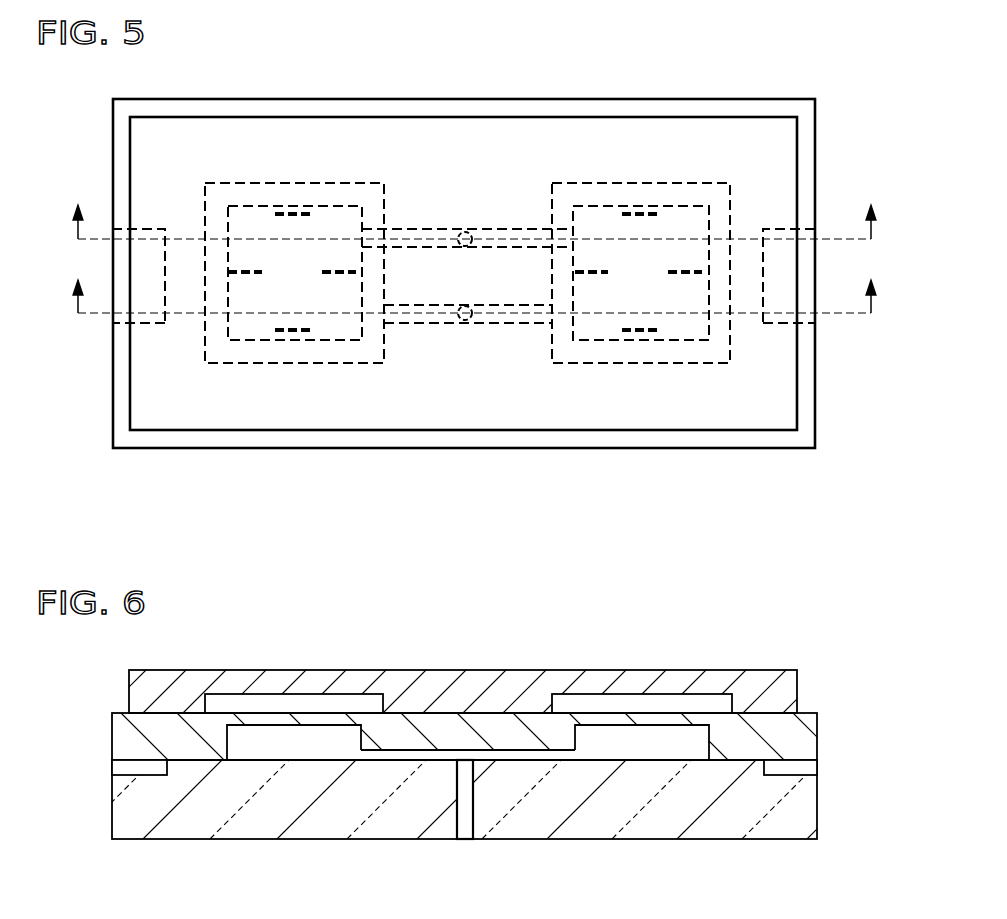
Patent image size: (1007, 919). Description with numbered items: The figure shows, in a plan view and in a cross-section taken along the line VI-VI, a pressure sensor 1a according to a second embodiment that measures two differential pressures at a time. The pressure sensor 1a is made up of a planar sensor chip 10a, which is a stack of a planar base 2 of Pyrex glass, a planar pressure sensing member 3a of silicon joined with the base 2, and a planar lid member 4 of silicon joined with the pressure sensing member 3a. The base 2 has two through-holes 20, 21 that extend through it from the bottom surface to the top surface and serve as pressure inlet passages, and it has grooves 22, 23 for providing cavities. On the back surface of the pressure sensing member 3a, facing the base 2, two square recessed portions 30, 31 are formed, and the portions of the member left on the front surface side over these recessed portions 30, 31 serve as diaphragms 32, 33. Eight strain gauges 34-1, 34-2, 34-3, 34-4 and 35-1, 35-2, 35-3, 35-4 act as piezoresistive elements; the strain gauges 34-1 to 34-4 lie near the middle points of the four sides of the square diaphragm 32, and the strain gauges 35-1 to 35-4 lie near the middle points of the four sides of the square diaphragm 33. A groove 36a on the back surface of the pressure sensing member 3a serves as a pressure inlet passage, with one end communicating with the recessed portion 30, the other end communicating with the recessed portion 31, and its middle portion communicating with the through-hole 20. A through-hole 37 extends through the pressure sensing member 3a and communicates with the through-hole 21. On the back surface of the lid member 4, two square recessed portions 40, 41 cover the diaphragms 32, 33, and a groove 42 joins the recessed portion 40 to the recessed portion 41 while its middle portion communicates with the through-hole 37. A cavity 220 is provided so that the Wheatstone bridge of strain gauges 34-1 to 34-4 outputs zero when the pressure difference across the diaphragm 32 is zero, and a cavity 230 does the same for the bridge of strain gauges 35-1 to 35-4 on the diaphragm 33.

In FIG. 5, the pressure sensor 1a is at (467, 73).
In FIG. 6, the pressure sensor 1a is at (442, 598).
In FIG. 6, the base 2 is at (803, 797).
In FIG. 5, the pressure sensing member 3a is at (817, 123).
In FIG. 6, the pressure sensing member 3a is at (803, 735).
In FIG. 5, the lid member 4 is at (130, 387).
In FIG. 6, the lid member 4 is at (792, 694).
In FIG. 5, the sensor chip 10a is at (135, 99).
In FIG. 6, the sensor chip 10a is at (95, 839).
In FIG. 5, the through-hole 20 is at (465, 230).
In FIG. 6, the through-hole 20 is at (465, 833).
In FIG. 5, the through-hole 21 is at (467, 323).
In FIG. 5, the groove 22 is at (775, 323).
In FIG. 6, the groove 22 is at (790, 777).
In FIG. 5, the groove 23 is at (142, 327).
In FIG. 6, the groove 23 is at (138, 777).
In FIG. 5, the cavity 220 is at (780, 262).
In FIG. 6, the cavity 220 is at (763, 767).
In FIG. 5, the cavity 230 is at (142, 262).
In FIG. 6, the cavity 230 is at (167, 770).
In FIG. 5, the recessed portion 30 is at (708, 328).
In FIG. 6, the recessed portion 30 is at (623, 742).
In FIG. 5, the recessed portion 31 is at (245, 207).
In FIG. 6, the recessed portion 31 is at (287, 743).
In FIG. 5, the diaphragm 32 is at (645, 262).
In FIG. 6, the diaphragm 32 is at (672, 720).
In FIG. 5, the diaphragm 33 is at (283, 262).
In FIG. 6, the diaphragm 33 is at (318, 720).
In FIG. 5, the strain gauge 34-1 is at (638, 210).
In FIG. 5, the strain gauge 34-2 is at (675, 278).
In FIG. 5, the strain gauge 34-3 is at (582, 278).
In FIG. 5, the strain gauge 34-4 is at (642, 328).
In FIG. 5, the strain gauge 35-1 is at (283, 214).
In FIG. 5, the strain gauge 35-2 is at (337, 277).
In FIG. 5, the strain gauge 35-3 is at (242, 277).
In FIG. 5, the strain gauge 35-4 is at (283, 332).
In FIG. 5, the groove 36a is at (515, 230).
In FIG. 6, the groove 36a is at (493, 752).
In FIG. 5, the through-hole 37 is at (465, 313).
In FIG. 5, the recessed portion 40 is at (620, 182).
In FIG. 6, the recessed portion 40 is at (628, 705).
In FIG. 5, the recessed portion 41 is at (339, 182).
In FIG. 6, the recessed portion 41 is at (273, 705).
In FIG. 5, the groove 42 is at (523, 325).